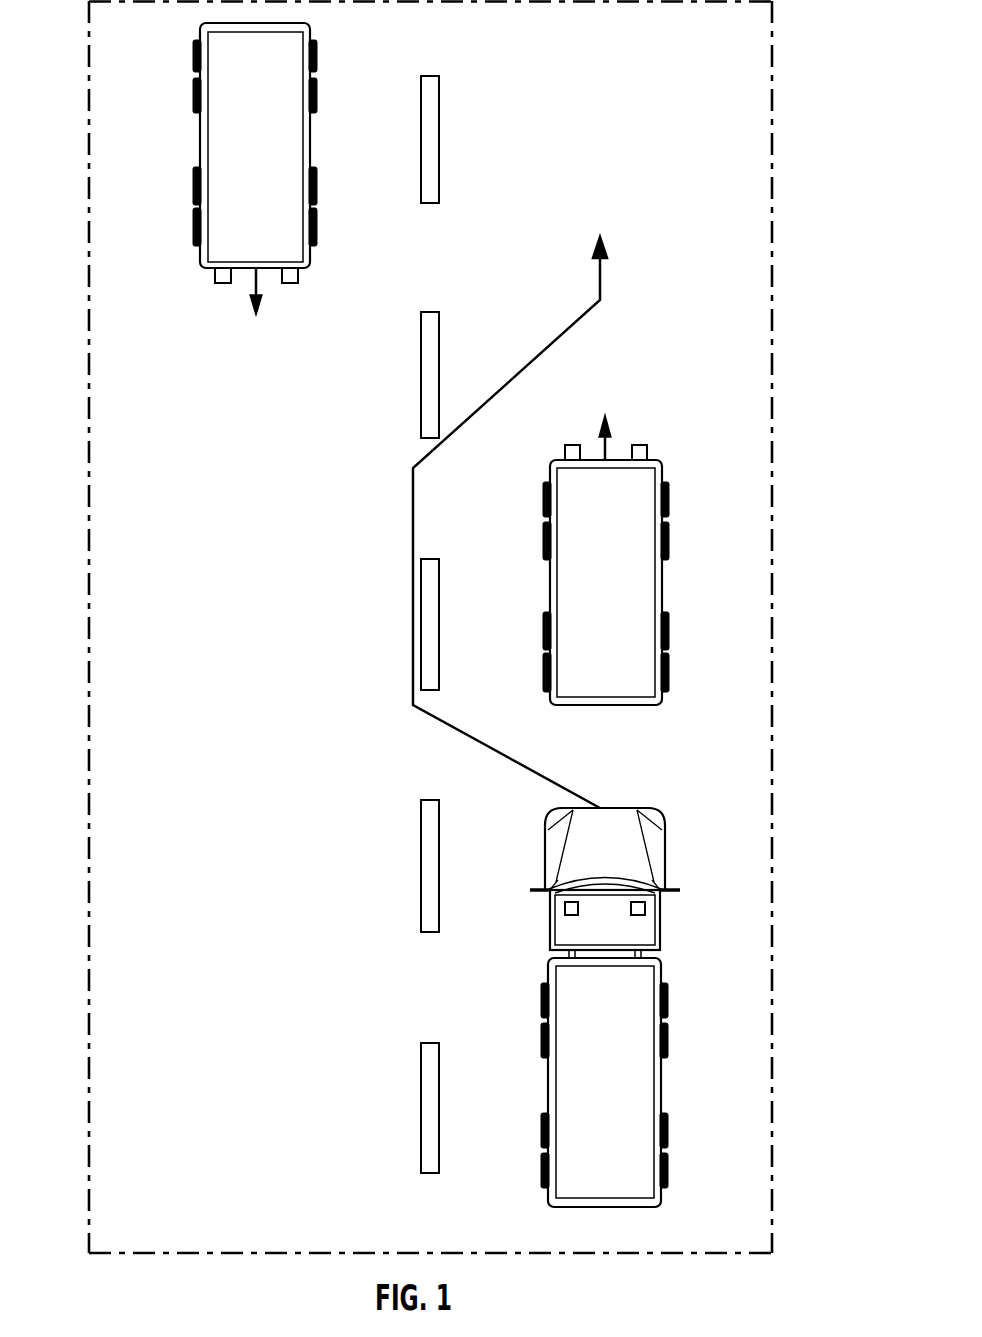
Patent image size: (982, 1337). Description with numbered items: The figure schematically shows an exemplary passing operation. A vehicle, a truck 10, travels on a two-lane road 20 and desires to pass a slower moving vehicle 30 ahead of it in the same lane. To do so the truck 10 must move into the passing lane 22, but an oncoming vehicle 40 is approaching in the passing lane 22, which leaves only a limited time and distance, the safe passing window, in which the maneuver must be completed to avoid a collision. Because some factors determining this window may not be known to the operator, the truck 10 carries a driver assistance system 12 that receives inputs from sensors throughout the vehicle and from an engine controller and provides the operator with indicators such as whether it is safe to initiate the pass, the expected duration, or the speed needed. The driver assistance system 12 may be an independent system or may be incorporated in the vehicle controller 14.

The truck 10 is at (661, 1082).
The driver assistance system 12 is at (645, 908).
The vehicle controller 14 is at (565, 908).
The two-lane road 20 is at (772, 163).
The passing lane 22 is at (128, 552).
The slower moving vehicle 30 is at (662, 583).
The oncoming vehicle 40 is at (198, 147).